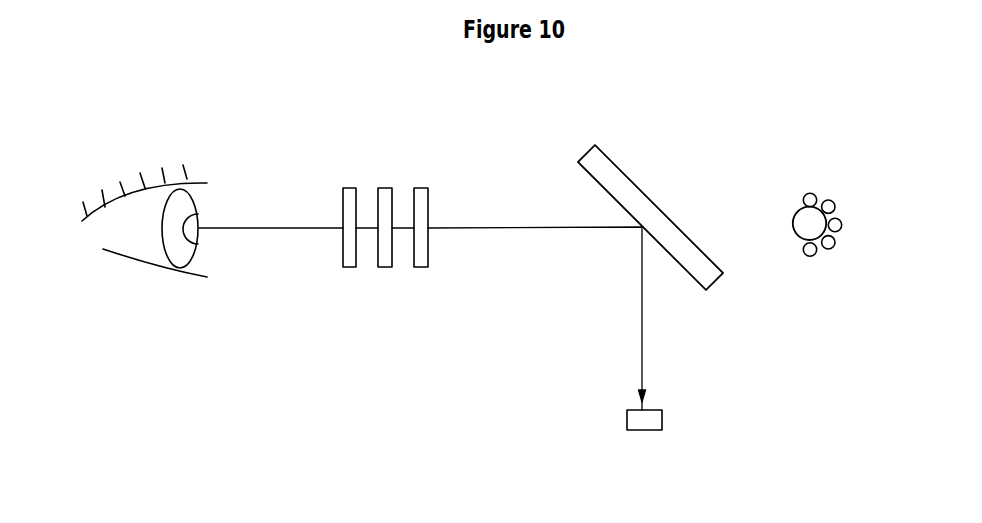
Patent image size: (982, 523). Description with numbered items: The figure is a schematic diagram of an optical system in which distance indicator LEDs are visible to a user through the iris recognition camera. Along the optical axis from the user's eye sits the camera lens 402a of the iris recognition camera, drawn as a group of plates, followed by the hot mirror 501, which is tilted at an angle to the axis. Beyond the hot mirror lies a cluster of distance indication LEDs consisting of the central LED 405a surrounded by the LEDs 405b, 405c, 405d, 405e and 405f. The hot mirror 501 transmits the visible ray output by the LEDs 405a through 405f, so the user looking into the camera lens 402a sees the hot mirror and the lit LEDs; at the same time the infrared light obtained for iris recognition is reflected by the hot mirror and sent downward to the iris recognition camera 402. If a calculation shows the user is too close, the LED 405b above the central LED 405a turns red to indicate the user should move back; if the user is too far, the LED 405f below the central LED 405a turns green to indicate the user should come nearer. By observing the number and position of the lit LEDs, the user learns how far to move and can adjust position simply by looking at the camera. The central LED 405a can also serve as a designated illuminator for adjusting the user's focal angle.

The camera lens 402a is at (428, 182).
The hot mirror 501 is at (640, 188).
The iris recognition camera 402 is at (643, 430).
The central LED 405a is at (800, 218).
The LED 405b is at (811, 193).
The LED 405c is at (833, 200).
The LED 405d is at (842, 225).
The LED 405e is at (835, 247).
The LED 405f is at (811, 256).